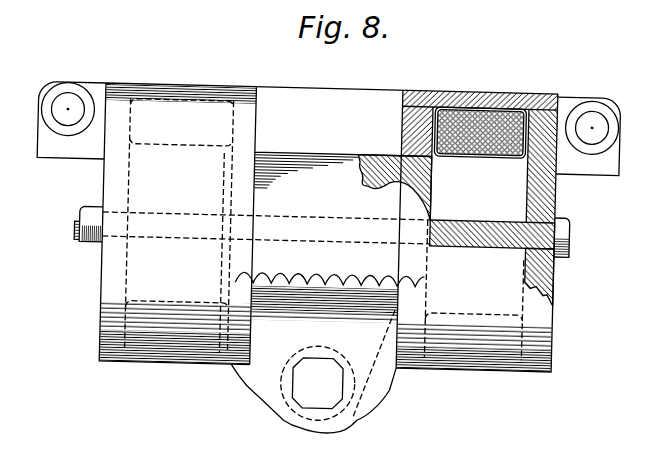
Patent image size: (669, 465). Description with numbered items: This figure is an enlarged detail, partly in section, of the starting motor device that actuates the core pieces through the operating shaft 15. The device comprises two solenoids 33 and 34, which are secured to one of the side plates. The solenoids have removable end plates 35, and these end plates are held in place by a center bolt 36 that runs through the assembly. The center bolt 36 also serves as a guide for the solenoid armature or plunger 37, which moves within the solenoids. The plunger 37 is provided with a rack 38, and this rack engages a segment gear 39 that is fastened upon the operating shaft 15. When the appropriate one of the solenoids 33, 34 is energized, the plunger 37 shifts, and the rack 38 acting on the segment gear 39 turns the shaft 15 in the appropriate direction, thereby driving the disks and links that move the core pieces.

The operating shaft 15 is at (288, 389).
The solenoid 33 is at (481, 103).
The solenoid 34 is at (194, 100).
The removable end plates 35 is at (106, 182).
The center bolt 36 is at (83, 224).
The solenoid armature or plunger 37 is at (360, 149).
The rack 38 is at (382, 260).
The segment gear 39 is at (400, 303).